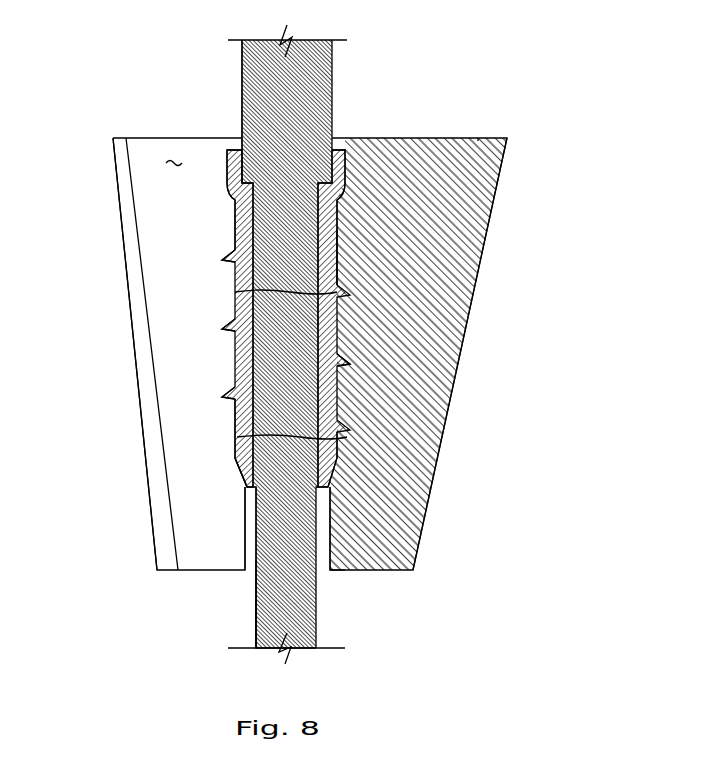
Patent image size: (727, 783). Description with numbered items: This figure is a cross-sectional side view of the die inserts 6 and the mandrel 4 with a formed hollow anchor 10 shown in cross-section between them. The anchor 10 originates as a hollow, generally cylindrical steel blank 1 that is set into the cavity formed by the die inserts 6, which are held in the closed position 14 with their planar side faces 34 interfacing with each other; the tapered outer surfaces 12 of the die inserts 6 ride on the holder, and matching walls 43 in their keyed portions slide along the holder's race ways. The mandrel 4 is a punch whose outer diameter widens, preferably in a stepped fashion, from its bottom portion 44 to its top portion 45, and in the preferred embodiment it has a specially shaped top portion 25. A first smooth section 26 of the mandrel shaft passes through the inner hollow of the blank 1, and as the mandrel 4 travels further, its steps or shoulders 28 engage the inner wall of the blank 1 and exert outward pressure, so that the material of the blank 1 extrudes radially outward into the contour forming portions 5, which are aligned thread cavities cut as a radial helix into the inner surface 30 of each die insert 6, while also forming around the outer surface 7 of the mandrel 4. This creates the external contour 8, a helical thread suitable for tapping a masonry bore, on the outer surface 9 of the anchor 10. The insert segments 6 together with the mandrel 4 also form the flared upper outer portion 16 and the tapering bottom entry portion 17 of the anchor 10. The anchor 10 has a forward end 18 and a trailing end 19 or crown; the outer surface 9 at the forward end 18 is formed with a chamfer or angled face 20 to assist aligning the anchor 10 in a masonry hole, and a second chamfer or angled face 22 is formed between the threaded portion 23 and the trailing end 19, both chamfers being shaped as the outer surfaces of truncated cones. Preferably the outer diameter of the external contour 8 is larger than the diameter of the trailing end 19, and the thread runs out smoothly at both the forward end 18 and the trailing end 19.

The hollow blank 1 is at (233, 232).
The mandrel 4 is at (338, 62).
The contour forming portions 5 is at (253, 288).
The die inserts 6 is at (128, 138).
The outer surface of the mandrel 7 is at (257, 555).
The external contour 8 is at (340, 362).
The outer surface of the hollow anchor 9 is at (338, 248).
The hollow anchor 10 is at (338, 218).
The outer surfaces of the die inserts 12 is at (459, 368).
The closed position 14 is at (548, 138).
The flared upper outer portion 16 is at (228, 190).
The tapering bottom entry portion 17 is at (330, 473).
The forward end 18 is at (330, 493).
The trailing end 19 is at (338, 160).
The chamfer or angled face 20 is at (240, 478).
The chamfer or angled face 22 is at (345, 193).
The threaded portion 23 is at (235, 297).
The specially shaped top portion 25 is at (345, 180).
The first smooth section 26 is at (332, 535).
The steps or shoulders 28 is at (230, 360).
The inner surface of the die insert 30 is at (333, 572).
The planar side faces 34 is at (172, 160).
The matching walls 43 is at (117, 172).
The bottom portion of the mandrel 44 is at (258, 628).
The top portion of the mandrel 45 is at (242, 50).